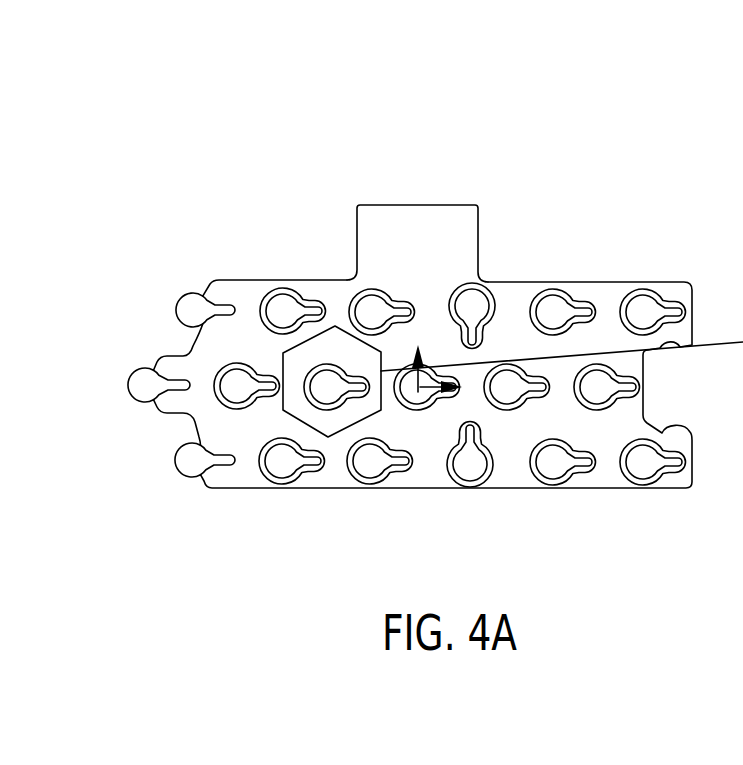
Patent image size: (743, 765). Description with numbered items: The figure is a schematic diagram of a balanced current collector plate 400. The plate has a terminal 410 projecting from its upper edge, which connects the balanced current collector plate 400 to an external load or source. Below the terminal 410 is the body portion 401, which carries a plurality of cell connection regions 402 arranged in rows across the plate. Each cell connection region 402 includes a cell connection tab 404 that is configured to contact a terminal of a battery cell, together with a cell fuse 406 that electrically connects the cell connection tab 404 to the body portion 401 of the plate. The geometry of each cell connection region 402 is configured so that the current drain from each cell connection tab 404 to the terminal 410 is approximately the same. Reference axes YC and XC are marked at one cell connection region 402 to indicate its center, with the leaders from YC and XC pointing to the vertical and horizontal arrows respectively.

The balanced current collector plate 400 is at (252, 124).
The body portion 401 is at (223, 288).
The cell connection region 402 is at (294, 318).
The cell connection tab 404 is at (322, 392).
The cell fuse 406 is at (360, 393).
The terminal 410 is at (467, 237).
The Y axis at center YC is at (417, 390).
The X axis at center XC is at (452, 396).